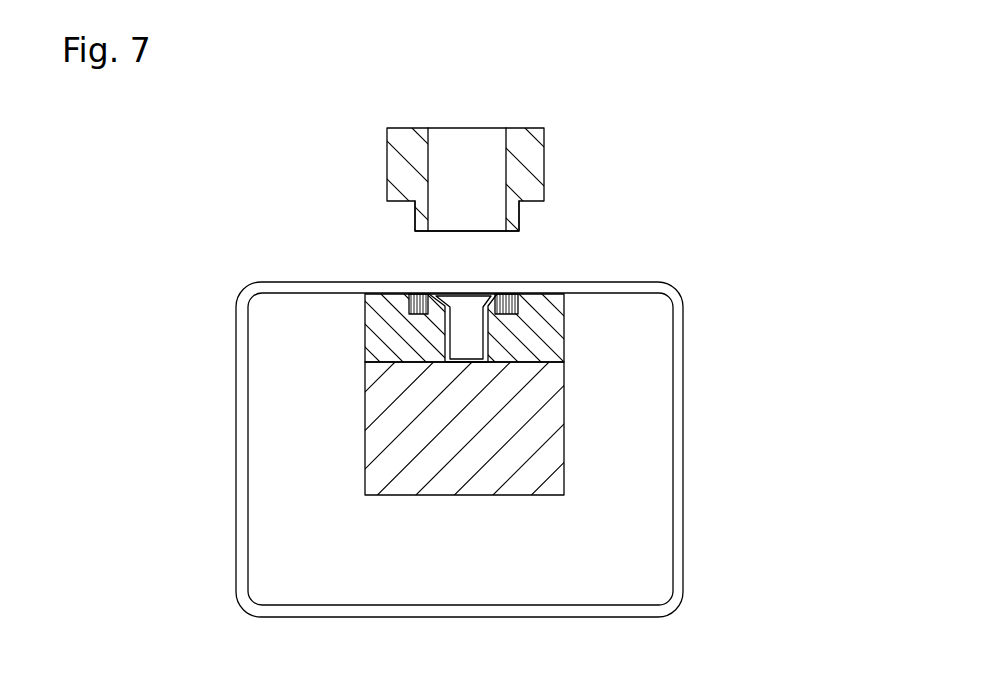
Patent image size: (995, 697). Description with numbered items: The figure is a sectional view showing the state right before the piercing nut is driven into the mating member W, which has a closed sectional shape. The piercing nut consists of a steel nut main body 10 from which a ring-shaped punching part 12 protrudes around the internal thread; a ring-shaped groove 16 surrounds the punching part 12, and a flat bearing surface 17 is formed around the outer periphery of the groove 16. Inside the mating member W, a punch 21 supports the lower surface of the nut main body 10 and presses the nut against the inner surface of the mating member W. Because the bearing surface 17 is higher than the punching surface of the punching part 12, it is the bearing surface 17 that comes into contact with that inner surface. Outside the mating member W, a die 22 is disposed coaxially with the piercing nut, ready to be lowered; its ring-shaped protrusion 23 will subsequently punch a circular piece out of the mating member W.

The nut main body 10 is at (565, 325).
The ring-shaped punching part 12 is at (495, 296).
The ring-shaped groove 16 is at (421, 295).
The bearing surface 17 is at (552, 295).
The punch 21 is at (565, 445).
The die 22 is at (537, 152).
The ring-shaped protrusion 23 is at (517, 217).
The mating member W is at (685, 330).